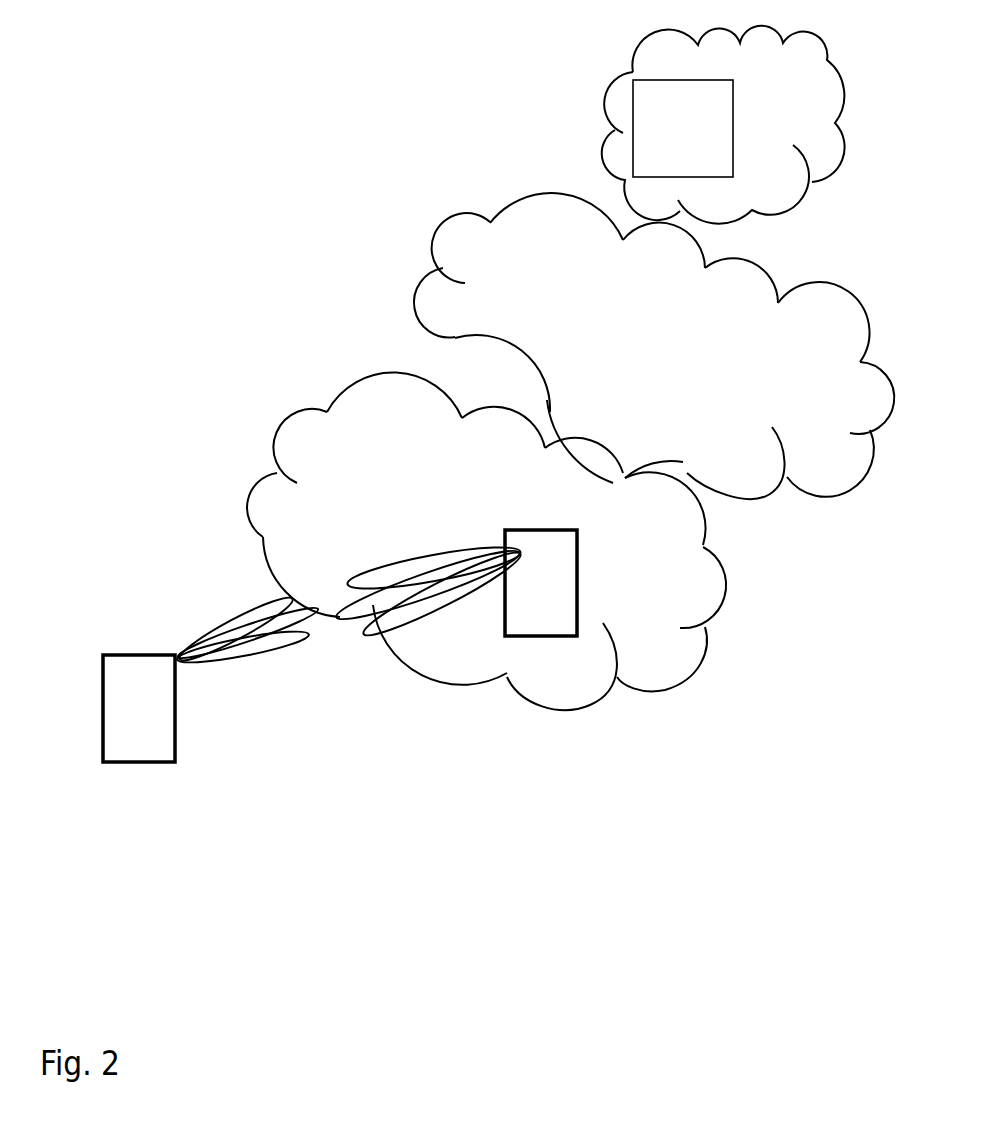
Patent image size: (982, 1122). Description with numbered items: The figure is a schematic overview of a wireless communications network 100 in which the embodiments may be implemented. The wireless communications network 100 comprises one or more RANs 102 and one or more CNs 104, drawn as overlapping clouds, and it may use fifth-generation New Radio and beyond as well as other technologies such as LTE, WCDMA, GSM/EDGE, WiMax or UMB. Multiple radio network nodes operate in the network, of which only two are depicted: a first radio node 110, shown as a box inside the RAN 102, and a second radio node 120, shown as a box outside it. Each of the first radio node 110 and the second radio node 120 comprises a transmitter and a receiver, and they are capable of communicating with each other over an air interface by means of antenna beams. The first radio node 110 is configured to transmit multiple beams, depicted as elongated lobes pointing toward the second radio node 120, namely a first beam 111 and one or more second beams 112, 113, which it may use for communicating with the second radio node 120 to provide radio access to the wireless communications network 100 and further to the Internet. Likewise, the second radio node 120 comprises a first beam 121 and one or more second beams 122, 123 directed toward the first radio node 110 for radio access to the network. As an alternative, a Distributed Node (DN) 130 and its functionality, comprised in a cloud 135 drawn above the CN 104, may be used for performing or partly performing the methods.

The wireless communications network 100 is at (256, 208).
The RAN 102 is at (416, 465).
The CN 104 is at (660, 348).
The first radio node 110 is at (578, 602).
The first beam 111 is at (375, 580).
The second beam 112 is at (400, 593).
The second beam 113 is at (430, 603).
The second radio node 120 is at (175, 690).
The first beam 121 is at (257, 620).
The second beam 122 is at (280, 625).
The second beam 123 is at (284, 632).
The Distributed Node (DN) 130 is at (707, 126).
The cloud 135 is at (828, 100).